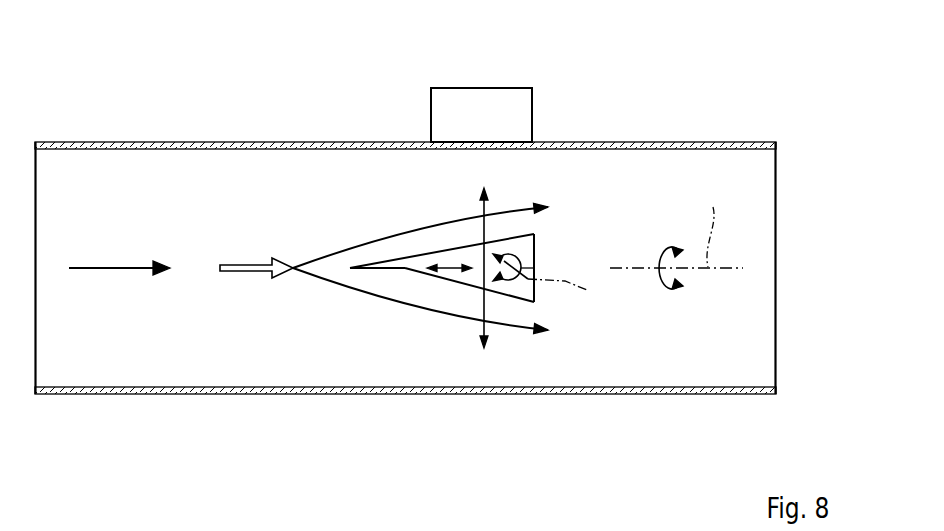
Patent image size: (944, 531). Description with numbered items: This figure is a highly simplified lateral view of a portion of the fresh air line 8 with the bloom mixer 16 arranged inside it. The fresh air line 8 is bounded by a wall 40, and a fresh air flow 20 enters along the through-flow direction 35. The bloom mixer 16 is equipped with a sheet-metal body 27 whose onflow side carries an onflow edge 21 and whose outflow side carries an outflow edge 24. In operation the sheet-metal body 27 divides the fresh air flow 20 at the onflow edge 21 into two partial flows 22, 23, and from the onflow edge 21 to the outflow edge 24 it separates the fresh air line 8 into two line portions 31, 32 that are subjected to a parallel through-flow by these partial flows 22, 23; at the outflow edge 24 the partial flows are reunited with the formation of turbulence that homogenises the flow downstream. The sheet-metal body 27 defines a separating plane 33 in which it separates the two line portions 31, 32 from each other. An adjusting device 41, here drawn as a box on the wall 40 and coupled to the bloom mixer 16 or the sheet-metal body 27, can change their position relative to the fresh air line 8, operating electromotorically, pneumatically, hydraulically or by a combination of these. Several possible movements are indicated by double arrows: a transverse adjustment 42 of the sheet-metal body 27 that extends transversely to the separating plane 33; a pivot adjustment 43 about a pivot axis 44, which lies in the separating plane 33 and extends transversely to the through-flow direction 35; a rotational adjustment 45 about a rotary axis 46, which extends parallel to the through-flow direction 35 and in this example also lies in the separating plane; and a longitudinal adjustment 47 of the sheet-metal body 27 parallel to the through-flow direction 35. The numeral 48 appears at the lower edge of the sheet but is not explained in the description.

The fresh air line 8 is at (405, 240).
The wall 40 is at (237, 141).
The line portion 31 is at (463, 358).
The line portion 32 is at (457, 130).
The adjusting device 41 is at (469, 125).
The through-flow direction 35 is at (112, 267).
The fresh air flow 20 is at (245, 262).
The onflow edge 21 is at (350, 267).
The partial flow 22 is at (403, 306).
The partial flow 23 is at (406, 235).
The outflow edge 24 is at (535, 247).
The bloom mixer 16 is at (513, 311).
The sheet-metal body 27 is at (513, 311).
The longitudinal adjustment 47 is at (450, 271).
The transverse adjustment 42 is at (485, 207).
The pivot adjustment 43 is at (535, 268).
The pivot axis 44 is at (587, 290).
The separating plane 33 is at (643, 267).
The rotary axis 46 is at (708, 224).
The rotational adjustment 45 is at (668, 291).
The component below 48 is at (334, 530).